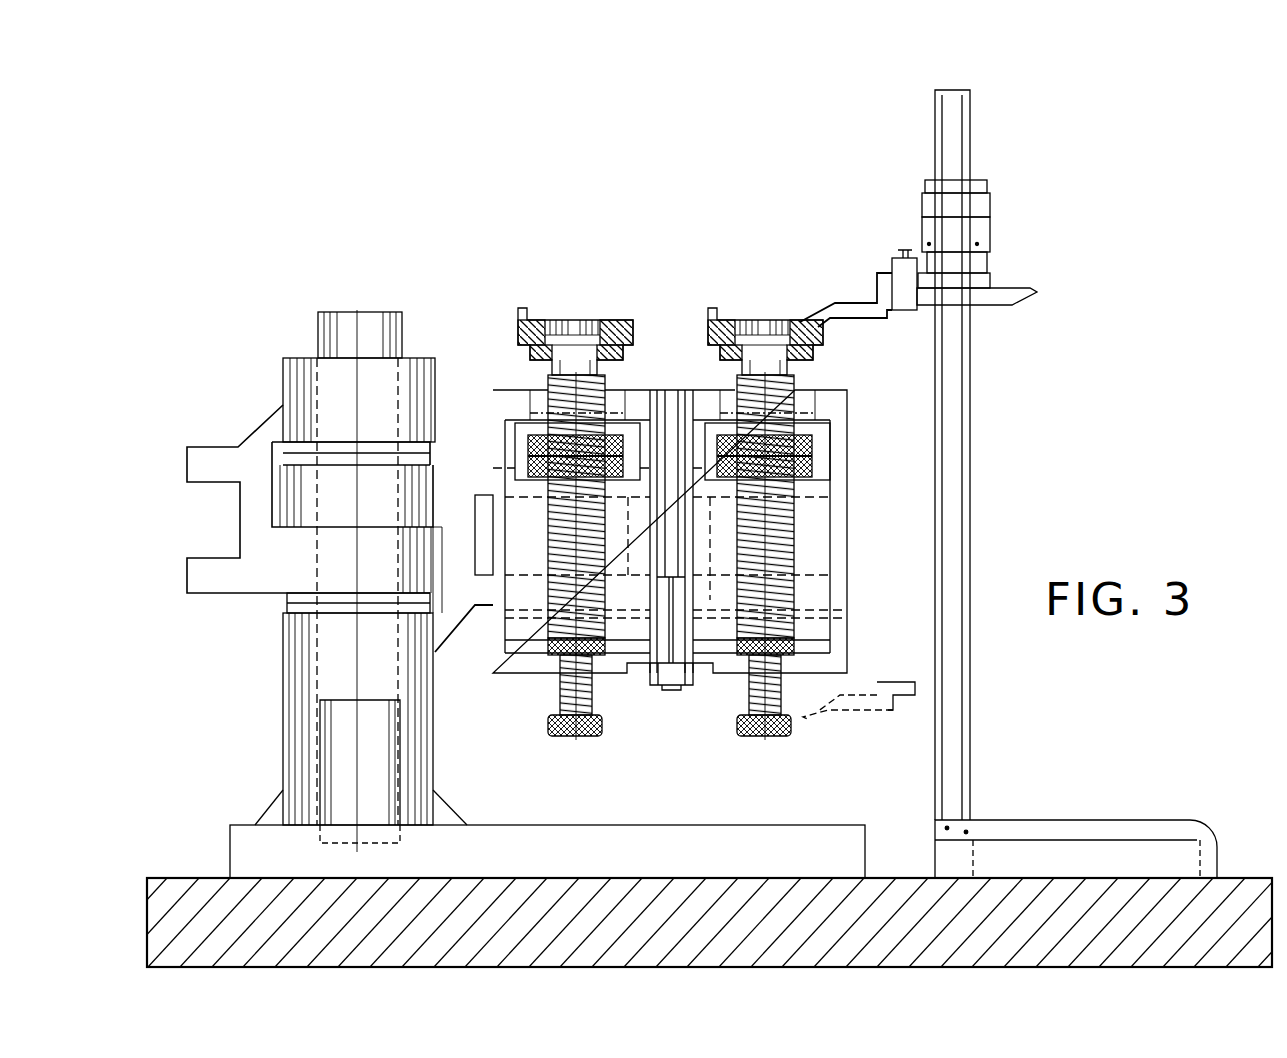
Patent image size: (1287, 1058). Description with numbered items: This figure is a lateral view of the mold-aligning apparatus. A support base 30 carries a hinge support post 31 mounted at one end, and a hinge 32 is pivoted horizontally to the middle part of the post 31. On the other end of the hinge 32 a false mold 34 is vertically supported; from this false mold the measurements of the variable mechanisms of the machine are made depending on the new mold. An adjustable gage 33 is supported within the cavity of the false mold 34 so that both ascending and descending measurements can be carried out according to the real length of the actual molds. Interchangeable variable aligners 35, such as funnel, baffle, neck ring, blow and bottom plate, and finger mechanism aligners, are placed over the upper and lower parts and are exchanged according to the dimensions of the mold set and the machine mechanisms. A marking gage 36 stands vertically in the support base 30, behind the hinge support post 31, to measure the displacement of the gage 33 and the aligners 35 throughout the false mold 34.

The support base 30 is at (998, 903).
The hinge support post 31 is at (347, 777).
The hinge 32 is at (338, 503).
The adjustable gage 33 is at (563, 590).
The false mold 34 is at (493, 388).
The interchangeable variable aligners 35 is at (765, 320).
The marking gage 36 is at (950, 655).